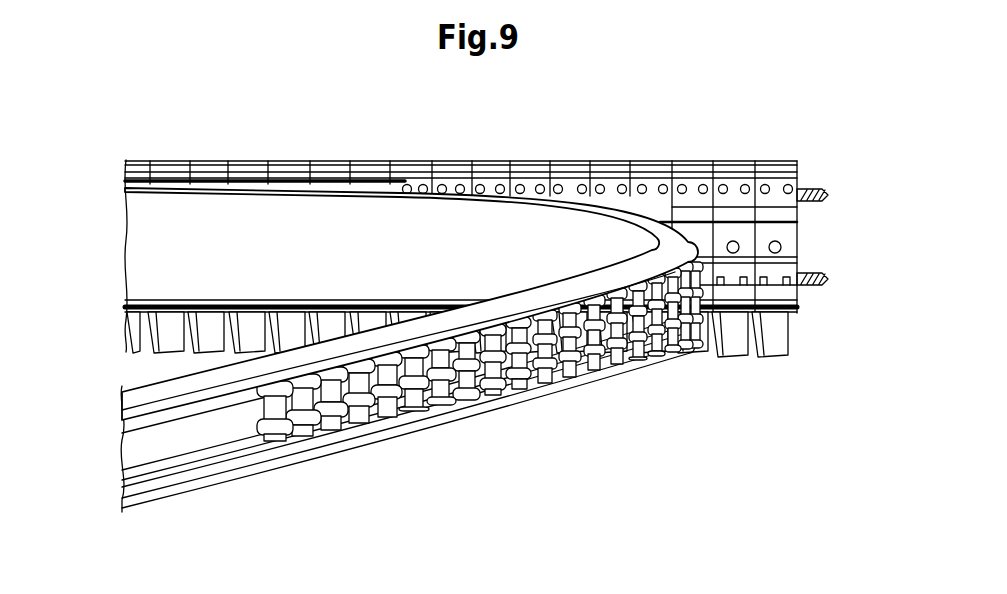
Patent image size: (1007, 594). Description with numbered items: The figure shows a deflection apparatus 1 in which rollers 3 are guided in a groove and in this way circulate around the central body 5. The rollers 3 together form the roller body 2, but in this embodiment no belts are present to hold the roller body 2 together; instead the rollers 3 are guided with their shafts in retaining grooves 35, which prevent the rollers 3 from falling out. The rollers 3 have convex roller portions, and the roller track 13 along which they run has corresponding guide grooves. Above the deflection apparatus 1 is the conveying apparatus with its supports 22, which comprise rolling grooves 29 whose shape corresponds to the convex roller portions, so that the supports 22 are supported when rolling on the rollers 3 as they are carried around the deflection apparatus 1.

The deflection apparatus 1 is at (545, 458).
The roller body 2 is at (480, 382).
The rollers 3 is at (357, 428).
The central body 5 is at (146, 392).
The roller track 13 is at (165, 447).
The supports 22 is at (571, 168).
The rolling grooves 29 is at (788, 268).
The retaining grooves 35 is at (230, 463).